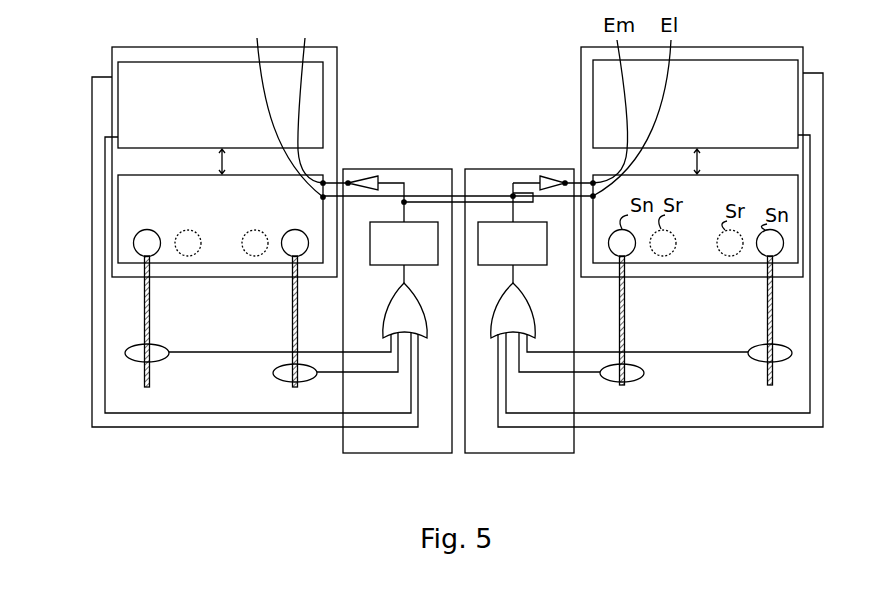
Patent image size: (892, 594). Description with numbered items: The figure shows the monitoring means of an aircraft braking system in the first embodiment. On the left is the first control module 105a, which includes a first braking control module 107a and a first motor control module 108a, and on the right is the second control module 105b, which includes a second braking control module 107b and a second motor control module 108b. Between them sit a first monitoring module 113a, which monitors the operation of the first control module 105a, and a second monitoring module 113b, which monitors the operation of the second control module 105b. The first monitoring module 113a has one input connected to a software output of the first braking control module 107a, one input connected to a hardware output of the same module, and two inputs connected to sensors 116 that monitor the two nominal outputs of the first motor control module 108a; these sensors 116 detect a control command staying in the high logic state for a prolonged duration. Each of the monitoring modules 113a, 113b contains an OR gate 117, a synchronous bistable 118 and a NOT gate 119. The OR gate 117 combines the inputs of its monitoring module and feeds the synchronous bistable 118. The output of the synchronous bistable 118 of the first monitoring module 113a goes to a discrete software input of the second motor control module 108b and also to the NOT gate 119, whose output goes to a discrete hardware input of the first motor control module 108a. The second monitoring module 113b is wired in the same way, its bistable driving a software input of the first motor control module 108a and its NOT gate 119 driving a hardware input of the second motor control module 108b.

The first control module 105a is at (337, 105).
The second control module 105b is at (697, 47).
The first braking control module 107a is at (117, 103).
The second braking control module 107b is at (798, 95).
The first motor control module 108a is at (117, 231).
The second motor control module 108b is at (722, 175).
The first monitoring module 113a is at (440, 169).
The second monitoring module 113b is at (545, 169).
The sensors 116 is at (163, 347).
The OR gate 117 is at (441, 290).
The synchronous bistable 118 is at (370, 263).
The NOT gate 119 is at (364, 180).